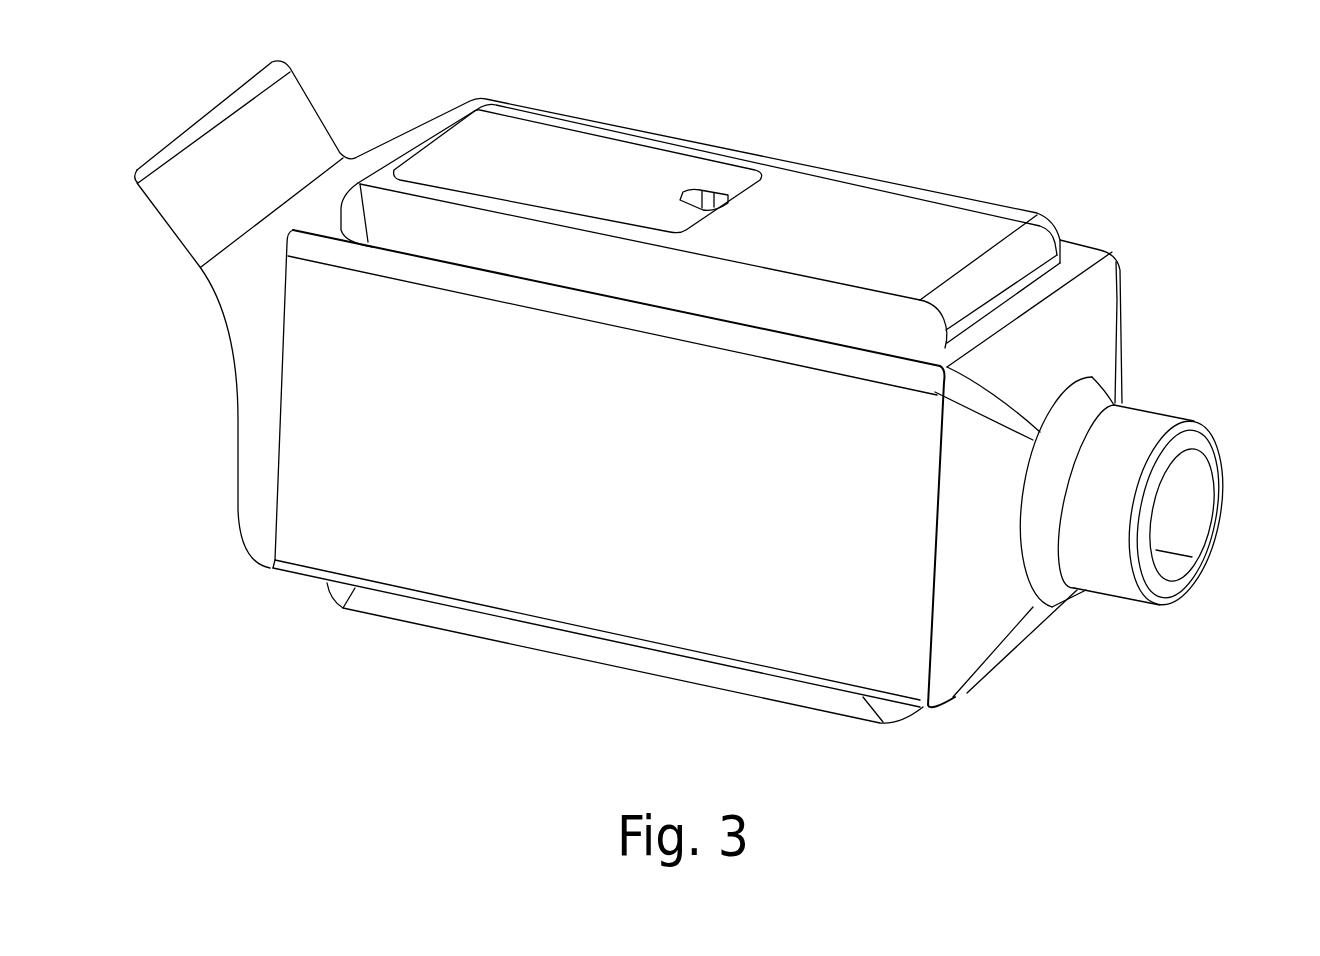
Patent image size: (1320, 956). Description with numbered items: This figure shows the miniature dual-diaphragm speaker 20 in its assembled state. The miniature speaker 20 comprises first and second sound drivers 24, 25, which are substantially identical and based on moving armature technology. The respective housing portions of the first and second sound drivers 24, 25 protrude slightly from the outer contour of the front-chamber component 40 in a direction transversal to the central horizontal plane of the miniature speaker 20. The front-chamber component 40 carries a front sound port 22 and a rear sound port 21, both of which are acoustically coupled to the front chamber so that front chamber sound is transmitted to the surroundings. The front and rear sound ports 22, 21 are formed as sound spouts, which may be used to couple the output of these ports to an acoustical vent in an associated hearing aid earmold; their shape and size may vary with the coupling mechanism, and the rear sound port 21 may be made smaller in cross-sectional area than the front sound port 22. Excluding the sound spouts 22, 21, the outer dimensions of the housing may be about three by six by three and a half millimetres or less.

The miniature dual-diaphragm speaker 20 is at (1153, 323).
The rear sound port 21 is at (238, 112).
The front sound port 22 is at (1193, 503).
The first sound driver 24 is at (1053, 217).
The second sound driver 25 is at (777, 703).
The front-chamber component 40 is at (985, 673).